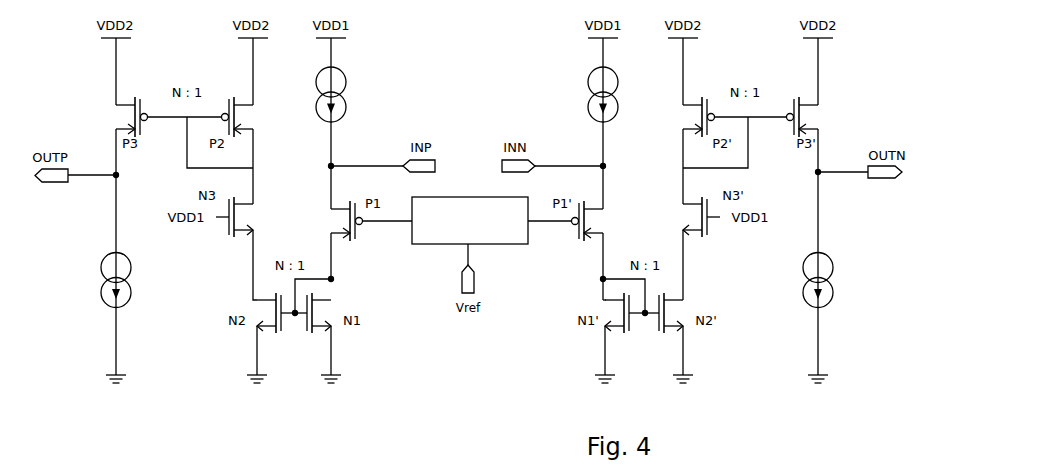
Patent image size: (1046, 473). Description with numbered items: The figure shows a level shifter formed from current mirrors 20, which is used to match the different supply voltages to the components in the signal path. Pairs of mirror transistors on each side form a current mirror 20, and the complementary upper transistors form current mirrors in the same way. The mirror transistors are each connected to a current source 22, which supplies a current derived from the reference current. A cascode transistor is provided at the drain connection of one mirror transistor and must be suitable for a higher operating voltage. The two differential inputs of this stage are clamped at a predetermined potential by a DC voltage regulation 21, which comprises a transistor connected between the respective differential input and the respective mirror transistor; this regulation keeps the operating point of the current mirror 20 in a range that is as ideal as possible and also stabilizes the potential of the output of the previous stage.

The current mirror 20 is at (110, 103).
The DC voltage regulation 21 is at (443, 253).
The current source 22 is at (348, 102).